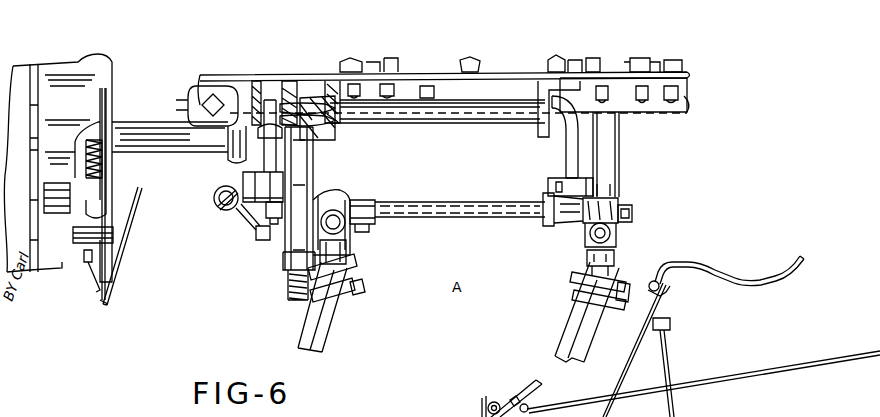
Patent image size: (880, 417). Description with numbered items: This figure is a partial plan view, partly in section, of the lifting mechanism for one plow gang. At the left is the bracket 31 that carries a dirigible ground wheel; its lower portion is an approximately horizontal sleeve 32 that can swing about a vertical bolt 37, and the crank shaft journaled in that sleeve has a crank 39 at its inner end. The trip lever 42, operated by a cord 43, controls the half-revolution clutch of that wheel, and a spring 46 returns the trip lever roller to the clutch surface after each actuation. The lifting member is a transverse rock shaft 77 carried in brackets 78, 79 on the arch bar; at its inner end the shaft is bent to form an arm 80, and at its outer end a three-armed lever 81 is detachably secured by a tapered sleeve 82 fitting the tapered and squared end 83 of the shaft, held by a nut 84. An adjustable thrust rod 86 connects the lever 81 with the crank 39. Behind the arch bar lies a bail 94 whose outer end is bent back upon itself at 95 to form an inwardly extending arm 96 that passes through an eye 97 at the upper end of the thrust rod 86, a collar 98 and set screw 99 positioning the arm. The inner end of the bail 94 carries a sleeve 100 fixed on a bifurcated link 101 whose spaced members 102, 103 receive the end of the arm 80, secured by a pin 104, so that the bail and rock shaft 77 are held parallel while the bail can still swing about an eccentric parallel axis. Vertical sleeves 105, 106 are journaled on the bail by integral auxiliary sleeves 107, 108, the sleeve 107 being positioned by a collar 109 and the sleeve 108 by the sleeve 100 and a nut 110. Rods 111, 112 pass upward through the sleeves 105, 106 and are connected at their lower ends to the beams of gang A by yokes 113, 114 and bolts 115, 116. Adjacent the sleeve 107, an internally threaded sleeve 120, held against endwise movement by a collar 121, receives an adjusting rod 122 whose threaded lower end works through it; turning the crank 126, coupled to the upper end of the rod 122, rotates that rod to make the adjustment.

The bracket 31 is at (155, 96).
The horizontal sleeve 32 is at (190, 156).
The vertical bolt 37 is at (212, 100).
The crank 39 is at (228, 150).
The trip lever 42 is at (120, 204).
The cord 43 is at (131, 234).
The spring 46 is at (110, 184).
The rock shaft 77 is at (450, 126).
The bracket 78 is at (420, 104).
The bracket 79 is at (540, 134).
The arm 80 is at (560, 148).
The three-armed lever 81 is at (312, 162).
The tapered sleeve 82 is at (298, 112).
The tapered and squared end 83 is at (318, 128).
The nut 84 is at (258, 102).
The thrust rod 86 is at (268, 164).
The bail 94 is at (462, 219).
The bent-back outer end 95 is at (214, 198).
The inwardly extending arm 96 is at (260, 146).
The eye 97 is at (242, 212).
The collar 98 is at (222, 210).
The set screw 99 is at (254, 218).
The sleeve 100 is at (572, 220).
The link 101 is at (605, 192).
The spaced member 102 is at (586, 184).
The spaced member 103 is at (550, 182).
The pin 104 is at (597, 192).
The vertical sleeve 105 is at (350, 258).
The vertical sleeve 106 is at (616, 254).
The auxiliary sleeve 107 is at (348, 198).
The auxiliary sleeve 108 is at (612, 204).
The collar 109 is at (372, 210).
The nut 110 is at (633, 213).
The rod 111 is at (352, 270).
The rod 112 is at (572, 278).
The yoke 113 is at (345, 300).
The yoke 114 is at (578, 296).
The bolt 115 is at (362, 290).
The bolt 116 is at (628, 300).
The sleeve 120 is at (288, 266).
The collar 121 is at (268, 228).
The adjusting rod 122 is at (292, 292).
The crank 126 is at (722, 264).